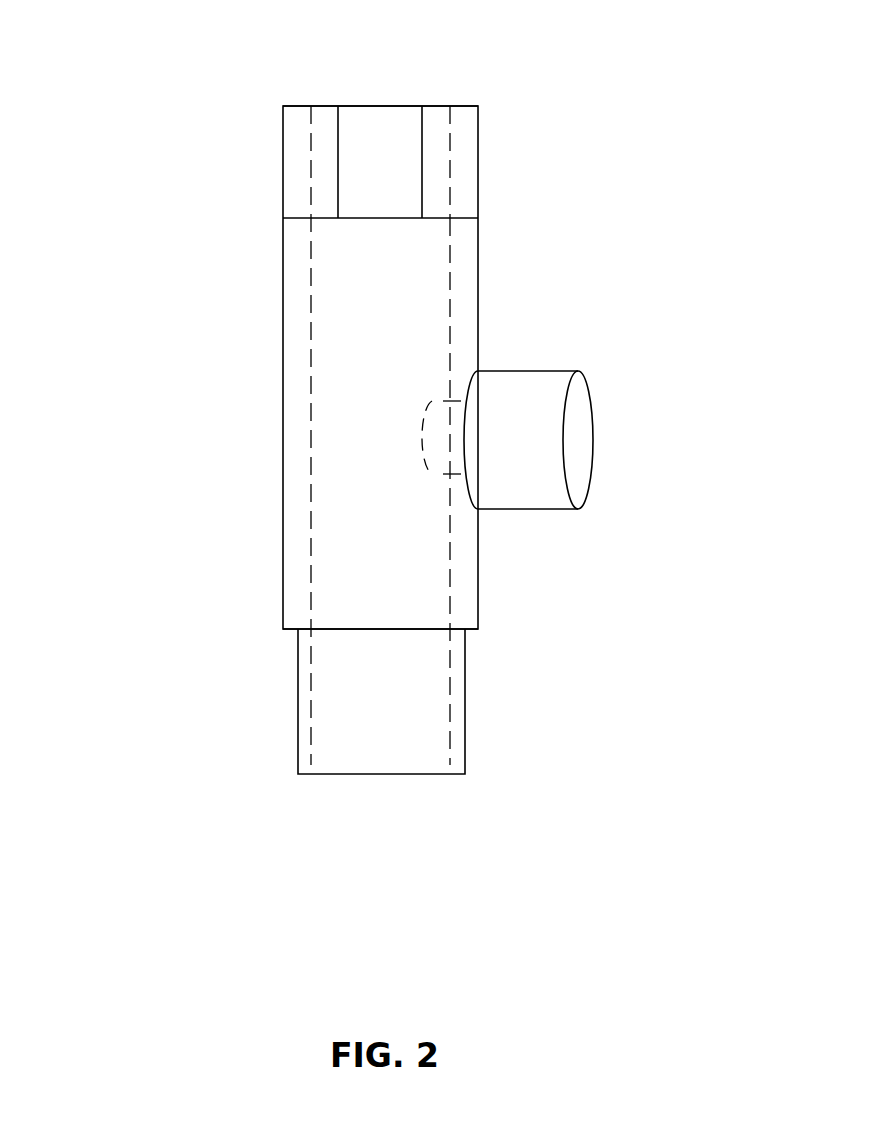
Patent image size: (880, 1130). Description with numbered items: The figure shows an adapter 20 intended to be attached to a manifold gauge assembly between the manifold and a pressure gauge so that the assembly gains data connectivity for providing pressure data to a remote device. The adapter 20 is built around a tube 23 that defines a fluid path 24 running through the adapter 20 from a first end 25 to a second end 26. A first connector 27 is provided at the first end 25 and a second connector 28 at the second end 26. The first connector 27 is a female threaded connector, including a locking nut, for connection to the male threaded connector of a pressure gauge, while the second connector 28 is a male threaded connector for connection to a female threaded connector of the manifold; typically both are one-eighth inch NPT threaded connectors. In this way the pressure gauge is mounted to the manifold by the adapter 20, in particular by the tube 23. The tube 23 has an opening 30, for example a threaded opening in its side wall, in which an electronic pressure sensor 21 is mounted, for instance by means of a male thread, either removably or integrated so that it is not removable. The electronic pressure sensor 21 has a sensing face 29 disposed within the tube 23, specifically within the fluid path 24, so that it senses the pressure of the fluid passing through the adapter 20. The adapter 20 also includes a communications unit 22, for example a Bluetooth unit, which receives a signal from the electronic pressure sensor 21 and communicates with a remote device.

The adapter 20 is at (136, 92).
The electronic pressure sensor 21 is at (443, 440).
The communications unit 22 is at (548, 425).
The tube 23 is at (355, 385).
The fluid path 24 is at (311, 505).
The first end 25 is at (397, 106).
The second end 26 is at (338, 774).
The first connector 27 is at (445, 157).
The second connector 28 is at (455, 717).
The sensing face 29 is at (422, 435).
The opening 30 is at (450, 400).